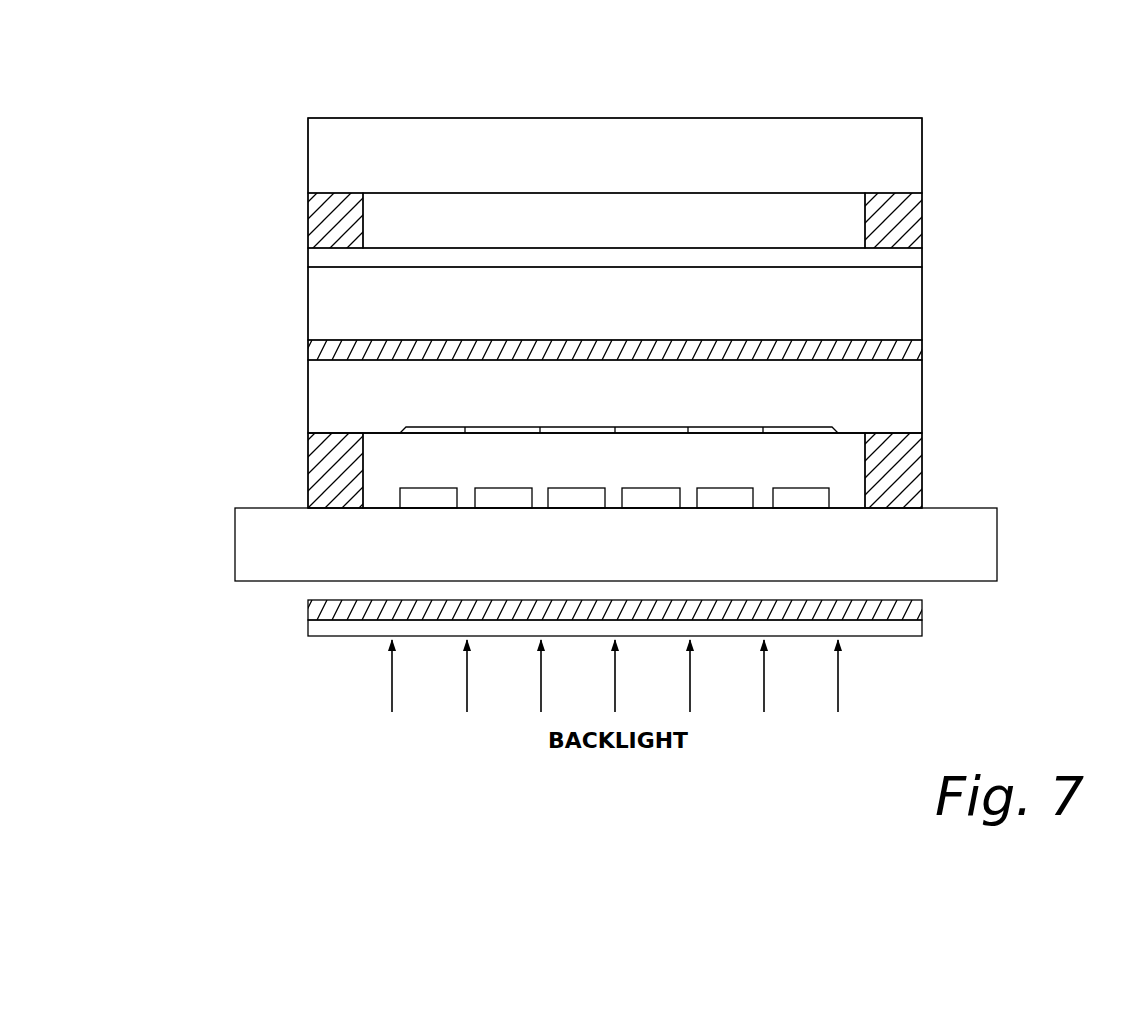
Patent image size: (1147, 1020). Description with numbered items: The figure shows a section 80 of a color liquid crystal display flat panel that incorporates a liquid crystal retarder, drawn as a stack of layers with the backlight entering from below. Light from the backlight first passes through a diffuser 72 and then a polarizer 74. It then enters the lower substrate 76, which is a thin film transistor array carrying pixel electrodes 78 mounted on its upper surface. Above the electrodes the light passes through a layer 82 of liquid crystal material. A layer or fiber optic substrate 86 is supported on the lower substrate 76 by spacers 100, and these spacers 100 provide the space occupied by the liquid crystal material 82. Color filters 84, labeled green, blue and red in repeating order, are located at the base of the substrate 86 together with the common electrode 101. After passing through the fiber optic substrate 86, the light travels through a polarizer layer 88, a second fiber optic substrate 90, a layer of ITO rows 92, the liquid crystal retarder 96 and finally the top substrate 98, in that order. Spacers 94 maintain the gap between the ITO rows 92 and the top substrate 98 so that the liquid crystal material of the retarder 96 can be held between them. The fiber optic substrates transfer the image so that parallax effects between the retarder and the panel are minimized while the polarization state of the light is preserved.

The section 80 is at (893, 68).
The top substrate 98 is at (632, 171).
The liquid crystal retarder 96 is at (632, 236).
The spacers 94 is at (306, 222).
The ITO rows 92 is at (306, 258).
The fiber optic substrate 90 is at (632, 318).
The polarizer layer 88 is at (926, 352).
The fiber optic substrate 86 is at (872, 387).
The color filters 84 is at (396, 429).
The common electrode 101 is at (306, 433).
The layer of liquid crystal material 82 is at (632, 476).
The spacers 100 is at (308, 487).
The pixel electrodes 78 is at (418, 488).
The lower substrate 76 is at (998, 545).
The polarizer 74 is at (926, 610).
The diffuser 72 is at (306, 627).